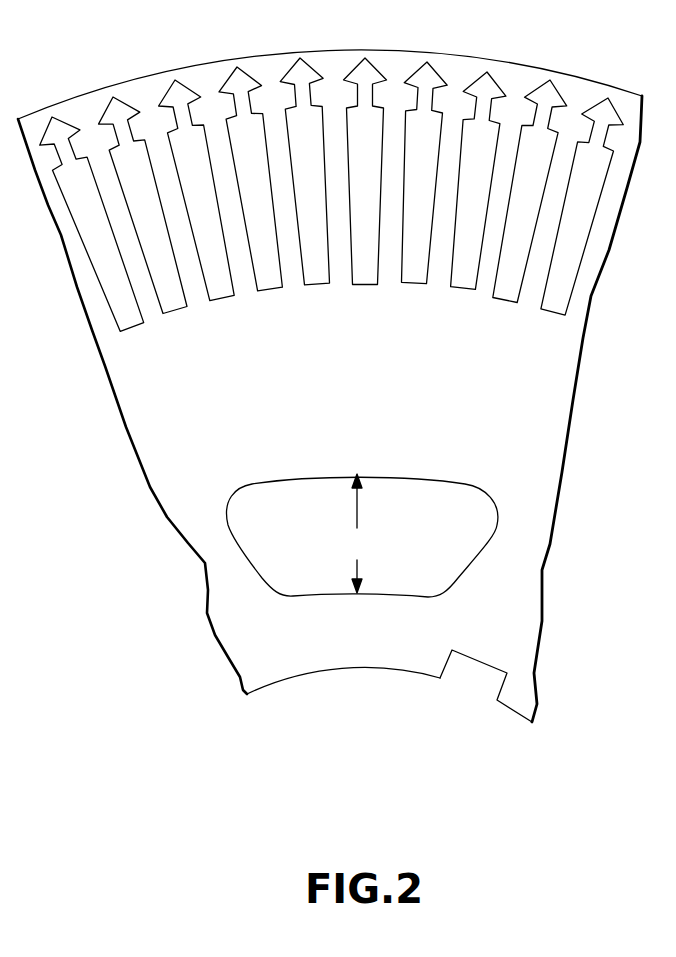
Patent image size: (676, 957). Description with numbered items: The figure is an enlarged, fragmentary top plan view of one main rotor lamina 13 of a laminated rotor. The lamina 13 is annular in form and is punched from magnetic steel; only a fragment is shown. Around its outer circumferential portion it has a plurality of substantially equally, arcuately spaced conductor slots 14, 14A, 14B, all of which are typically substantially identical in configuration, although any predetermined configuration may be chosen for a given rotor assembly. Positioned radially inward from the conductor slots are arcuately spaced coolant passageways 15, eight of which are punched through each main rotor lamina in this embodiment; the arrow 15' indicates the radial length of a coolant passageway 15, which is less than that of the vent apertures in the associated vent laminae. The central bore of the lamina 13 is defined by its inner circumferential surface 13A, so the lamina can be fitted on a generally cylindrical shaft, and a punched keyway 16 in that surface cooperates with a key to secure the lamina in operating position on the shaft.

The main rotor lamina 13 is at (531, 63).
The inner circumferential surface 13A is at (333, 669).
The conductor slot 14 is at (236, 76).
The conductor slot 14A is at (297, 63).
The conductor slot 14B is at (363, 60).
The coolant passageway 15 is at (366, 512).
The arrow indicating radial length 15' is at (359, 533).
The punched keyway 16 is at (483, 668).